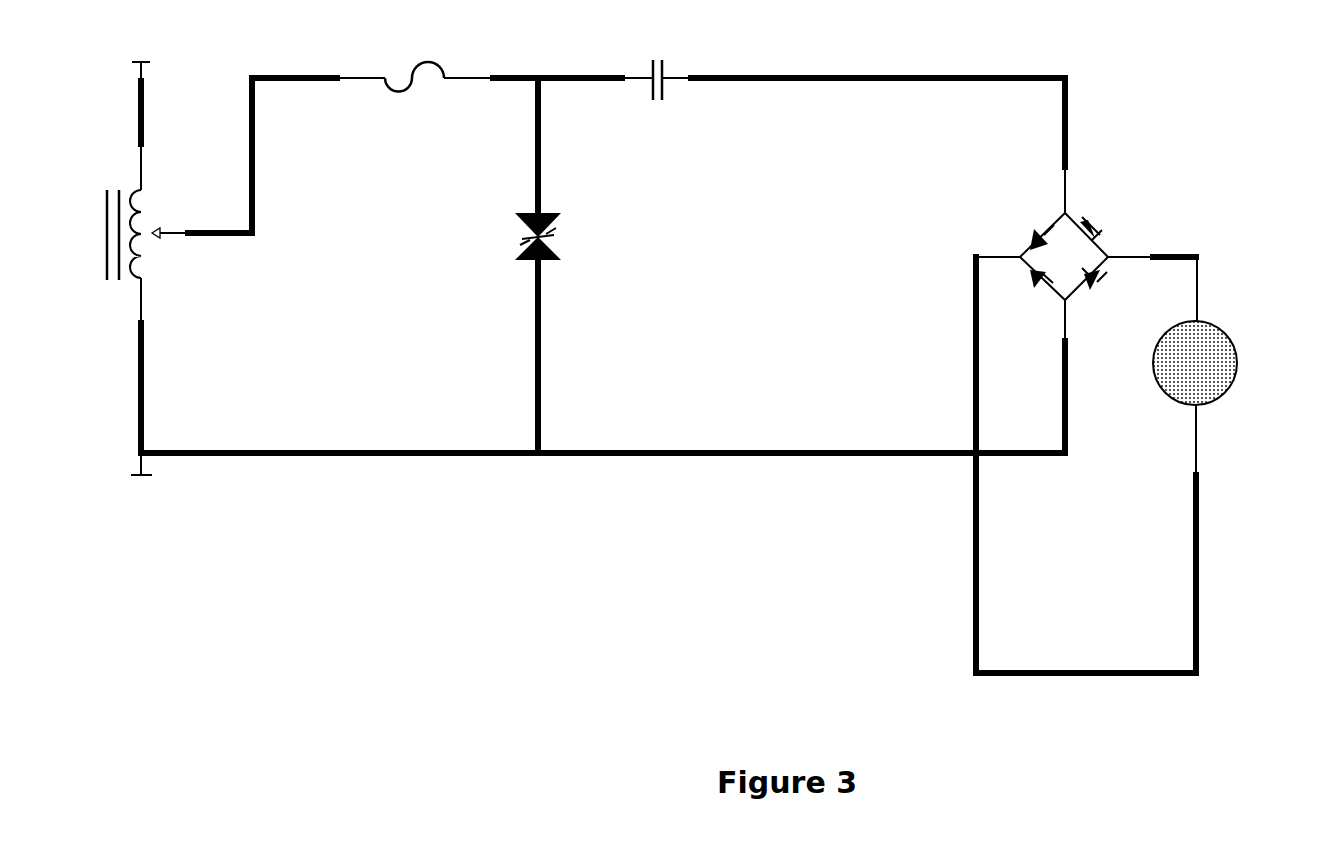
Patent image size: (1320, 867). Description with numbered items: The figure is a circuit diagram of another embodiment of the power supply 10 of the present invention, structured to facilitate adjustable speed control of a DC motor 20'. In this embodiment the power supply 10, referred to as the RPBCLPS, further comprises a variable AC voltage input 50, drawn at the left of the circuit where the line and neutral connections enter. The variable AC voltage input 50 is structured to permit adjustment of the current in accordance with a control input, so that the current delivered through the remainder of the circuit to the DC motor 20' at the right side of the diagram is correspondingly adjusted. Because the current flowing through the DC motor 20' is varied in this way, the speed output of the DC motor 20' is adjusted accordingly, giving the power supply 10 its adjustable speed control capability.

The power supply 10 is at (1158, 62).
The variable AC voltage input 50 is at (100, 225).
The DC motor 20' is at (1234, 360).